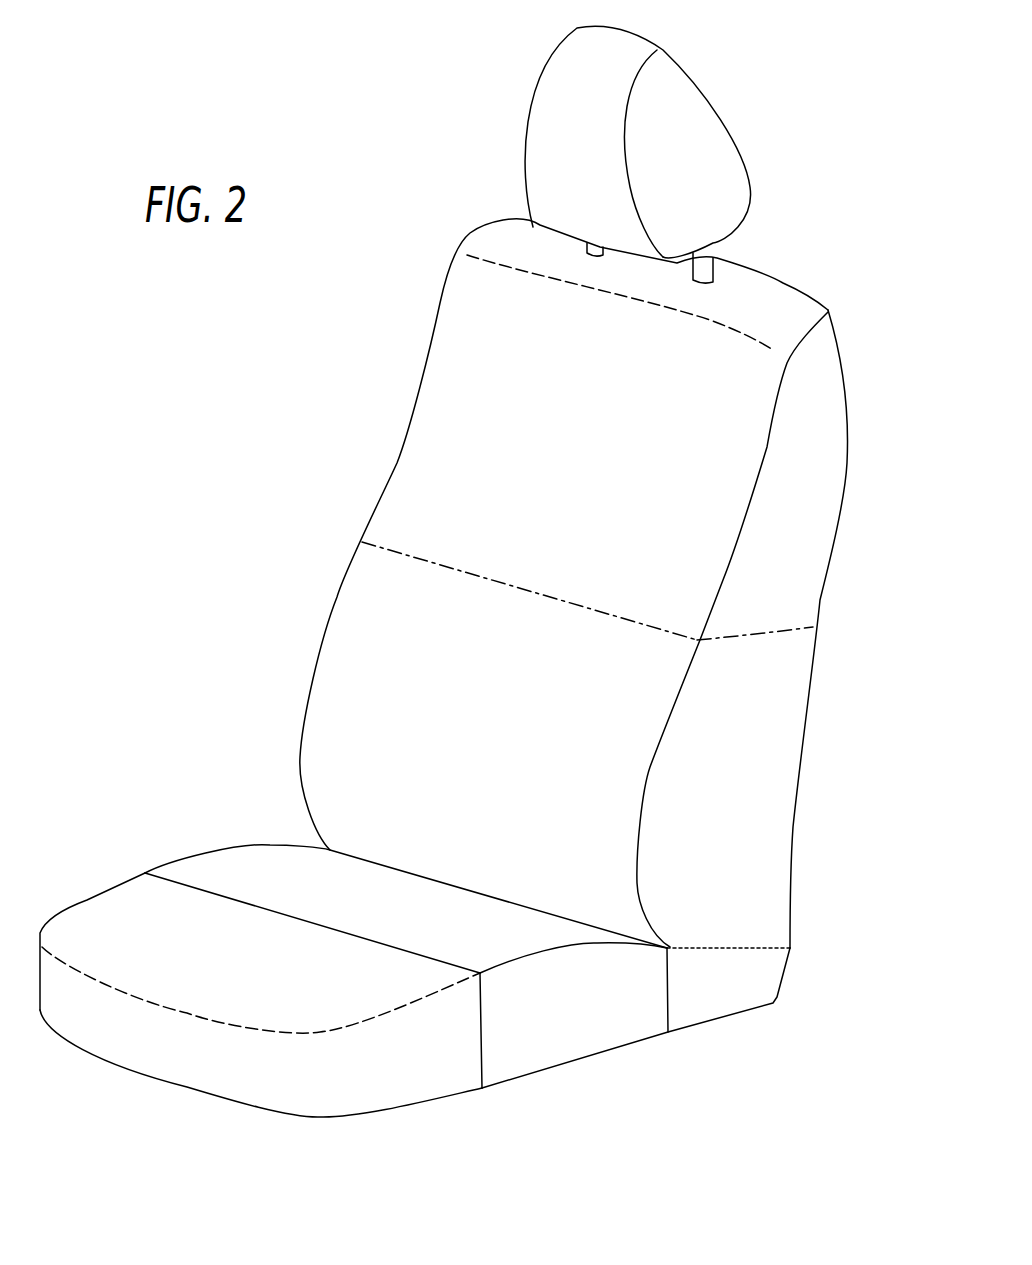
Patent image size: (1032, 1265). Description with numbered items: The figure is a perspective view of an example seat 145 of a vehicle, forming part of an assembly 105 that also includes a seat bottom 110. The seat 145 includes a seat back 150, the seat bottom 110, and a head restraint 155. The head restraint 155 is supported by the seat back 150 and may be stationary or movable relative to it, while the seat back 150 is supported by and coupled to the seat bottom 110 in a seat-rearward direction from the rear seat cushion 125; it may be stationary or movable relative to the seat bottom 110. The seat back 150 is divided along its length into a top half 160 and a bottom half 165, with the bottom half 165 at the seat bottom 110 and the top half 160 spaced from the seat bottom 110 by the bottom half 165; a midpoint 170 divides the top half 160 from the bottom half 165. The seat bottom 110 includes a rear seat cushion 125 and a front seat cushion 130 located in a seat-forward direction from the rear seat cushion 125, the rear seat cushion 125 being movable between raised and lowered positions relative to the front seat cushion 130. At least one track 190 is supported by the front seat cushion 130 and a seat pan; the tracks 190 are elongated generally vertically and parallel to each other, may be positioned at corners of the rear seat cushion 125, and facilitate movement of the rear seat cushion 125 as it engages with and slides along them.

The assembly 105 is at (686, 1108).
The seat bottom 110 is at (223, 1100).
The rear seat cushion 125 is at (215, 850).
The front seat cushion 130 is at (87, 900).
The seat 145 is at (416, 76).
The seat back 150 is at (783, 283).
The head restraint 155 is at (733, 143).
The top half 160 is at (837, 543).
The bottom half 165 is at (793, 833).
The midpoint 170 is at (765, 633).
The track 190 is at (145, 873).